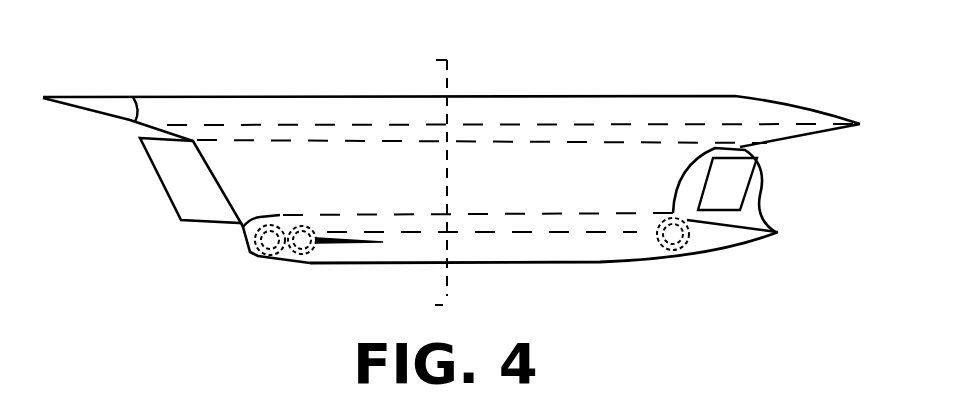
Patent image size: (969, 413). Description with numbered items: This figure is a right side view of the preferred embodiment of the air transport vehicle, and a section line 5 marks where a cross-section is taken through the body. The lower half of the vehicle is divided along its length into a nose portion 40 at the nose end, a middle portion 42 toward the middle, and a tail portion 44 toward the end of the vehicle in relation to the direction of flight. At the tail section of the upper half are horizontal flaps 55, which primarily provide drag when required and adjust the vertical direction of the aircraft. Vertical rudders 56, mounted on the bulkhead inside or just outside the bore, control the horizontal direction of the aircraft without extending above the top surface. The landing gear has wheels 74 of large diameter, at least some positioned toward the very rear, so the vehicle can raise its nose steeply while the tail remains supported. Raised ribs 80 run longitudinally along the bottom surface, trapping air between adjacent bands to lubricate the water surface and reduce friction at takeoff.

The nose portion 40 is at (748, 262).
The middle portion 42 is at (513, 285).
The tail portion 44 is at (208, 318).
The horizontal flap 55 is at (95, 98).
The vertical rudder 56 is at (180, 180).
The wheel 74 is at (268, 240).
The raised rib 80 is at (328, 265).
The section line 5- 5 is at (428, 58).